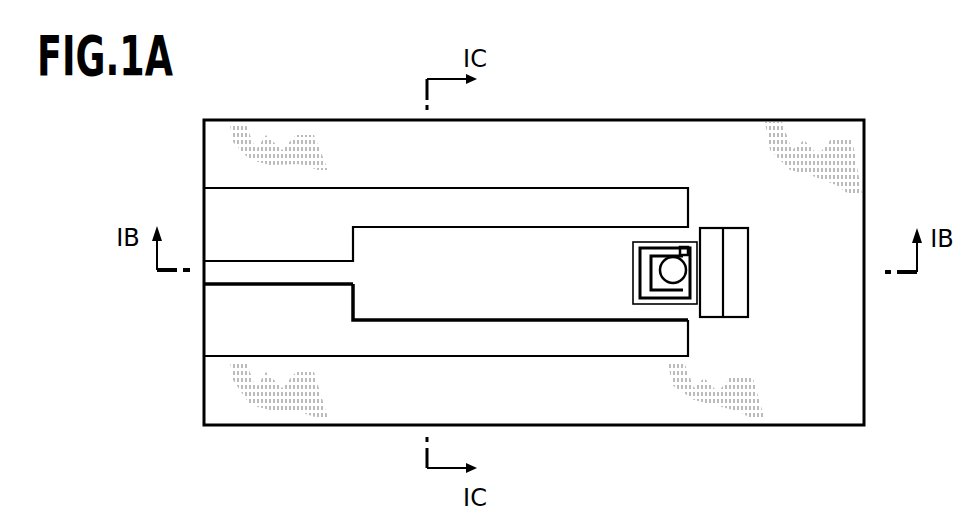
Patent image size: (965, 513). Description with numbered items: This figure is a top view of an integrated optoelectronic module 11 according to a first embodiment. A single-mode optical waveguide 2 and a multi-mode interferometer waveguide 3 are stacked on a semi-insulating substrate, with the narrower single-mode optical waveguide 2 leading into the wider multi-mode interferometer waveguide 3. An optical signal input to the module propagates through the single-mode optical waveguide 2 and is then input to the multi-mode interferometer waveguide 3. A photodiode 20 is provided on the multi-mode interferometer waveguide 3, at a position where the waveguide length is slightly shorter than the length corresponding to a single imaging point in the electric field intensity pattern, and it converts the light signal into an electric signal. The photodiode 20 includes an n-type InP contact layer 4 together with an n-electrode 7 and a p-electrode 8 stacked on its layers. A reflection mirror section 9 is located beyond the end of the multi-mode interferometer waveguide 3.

The integrated optoelectronic module 11 is at (203, 48).
The single-mode optical waveguide 2 is at (208, 300).
The multi-mode interferometer waveguide 3 is at (685, 327).
The n-type InP contact layer 4 is at (641, 289).
The n-electrode 7 is at (643, 258).
The p-electrode 8 is at (672, 261).
The reflection mirror section 9 is at (765, 228).
The photodiode 20 is at (695, 232).